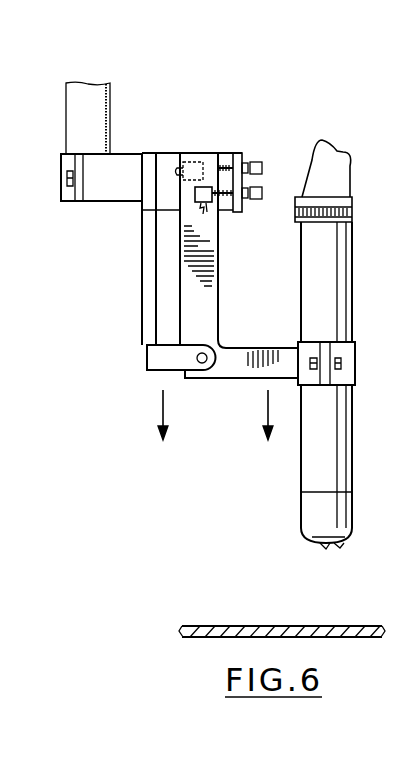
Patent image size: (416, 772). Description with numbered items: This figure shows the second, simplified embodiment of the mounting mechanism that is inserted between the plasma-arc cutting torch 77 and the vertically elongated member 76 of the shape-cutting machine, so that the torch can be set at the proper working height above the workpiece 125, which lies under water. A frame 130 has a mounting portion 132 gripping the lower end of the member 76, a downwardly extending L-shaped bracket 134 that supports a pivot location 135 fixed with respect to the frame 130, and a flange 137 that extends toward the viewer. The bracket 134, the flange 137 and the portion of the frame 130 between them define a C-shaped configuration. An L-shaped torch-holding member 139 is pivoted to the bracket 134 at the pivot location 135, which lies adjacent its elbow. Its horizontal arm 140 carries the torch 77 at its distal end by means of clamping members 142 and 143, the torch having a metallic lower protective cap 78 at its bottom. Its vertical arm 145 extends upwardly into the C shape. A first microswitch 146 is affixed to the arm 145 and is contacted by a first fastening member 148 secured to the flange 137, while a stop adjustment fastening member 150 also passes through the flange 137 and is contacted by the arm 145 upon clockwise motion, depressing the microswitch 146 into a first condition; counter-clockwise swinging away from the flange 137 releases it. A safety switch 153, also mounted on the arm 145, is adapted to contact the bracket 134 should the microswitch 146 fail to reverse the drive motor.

The vertically elongated member 76 is at (92, 113).
The plasma-arc cutting torch 77 is at (342, 445).
The metallic lower protective cap 78 is at (342, 517).
The workpiece 125 is at (250, 623).
The frame 130 is at (165, 153).
The mounting portion 132 is at (107, 193).
The L-shaped bracket 134 is at (155, 272).
The pivot location 135 is at (202, 364).
The flange 137 is at (237, 153).
The torch-holding member 139 is at (237, 249).
The horizontal arm 140 is at (248, 348).
The clamping member 142 is at (350, 357).
The clamping member 143 is at (304, 357).
The vertical arm 145 is at (213, 276).
The first microswitch 146 is at (195, 198).
The first fastening member 148 is at (262, 200).
The stop adjustment fastening member 150 is at (264, 166).
The safety switch 153 is at (203, 160).